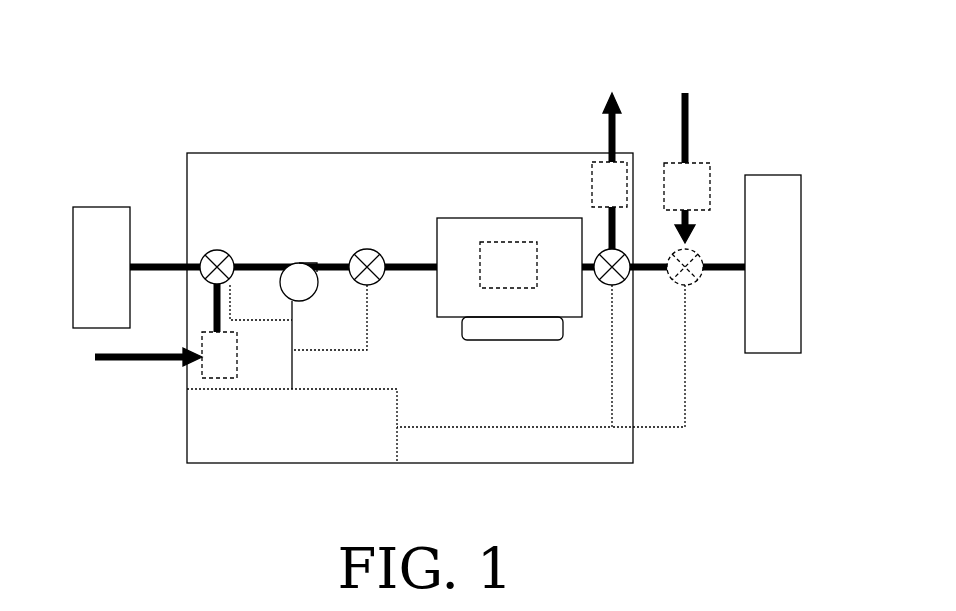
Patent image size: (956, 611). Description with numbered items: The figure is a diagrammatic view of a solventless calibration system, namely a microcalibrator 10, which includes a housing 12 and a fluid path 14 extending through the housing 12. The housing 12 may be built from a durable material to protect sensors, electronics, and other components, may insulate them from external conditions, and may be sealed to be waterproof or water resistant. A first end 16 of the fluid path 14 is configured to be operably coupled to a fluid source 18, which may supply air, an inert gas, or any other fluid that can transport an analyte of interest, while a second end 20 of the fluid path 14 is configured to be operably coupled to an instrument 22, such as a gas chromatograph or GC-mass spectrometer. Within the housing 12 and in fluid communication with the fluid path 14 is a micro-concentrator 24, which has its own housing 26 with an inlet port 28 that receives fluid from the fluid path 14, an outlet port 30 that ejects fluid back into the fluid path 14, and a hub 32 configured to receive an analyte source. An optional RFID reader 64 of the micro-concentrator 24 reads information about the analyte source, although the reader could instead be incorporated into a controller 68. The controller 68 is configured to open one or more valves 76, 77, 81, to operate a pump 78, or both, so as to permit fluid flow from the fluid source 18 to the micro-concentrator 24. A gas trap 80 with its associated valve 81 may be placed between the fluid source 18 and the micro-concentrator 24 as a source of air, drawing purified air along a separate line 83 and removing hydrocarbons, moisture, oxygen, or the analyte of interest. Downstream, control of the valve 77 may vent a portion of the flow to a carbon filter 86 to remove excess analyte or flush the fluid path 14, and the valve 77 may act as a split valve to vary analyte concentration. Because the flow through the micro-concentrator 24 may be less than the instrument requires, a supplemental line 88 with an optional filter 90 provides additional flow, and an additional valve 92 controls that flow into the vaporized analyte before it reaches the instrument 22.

The microcalibrator 10 is at (196, 101).
The housing 12 is at (268, 153).
The fluid path 14 is at (262, 262).
The first end 16 is at (132, 272).
The fluid source 18 is at (107, 206).
The second end 20 is at (742, 272).
The instrument 22 is at (762, 175).
The micro-concentrator 24 is at (519, 211).
The housing 26 is at (437, 242).
The inlet port 28 is at (438, 270).
The outlet port 30 is at (580, 268).
The hub 32 is at (461, 330).
The RFID reader 64 is at (483, 242).
The controller 68 is at (398, 402).
The valve 76 is at (360, 250).
The valve 77 is at (598, 282).
The pump 78 is at (290, 262).
The gas trap 80 is at (238, 353).
The valve 81 is at (226, 250).
The line 83 is at (157, 360).
The carbon filter 86 is at (592, 177).
The supplemental line 88 is at (690, 150).
The filter 90 is at (663, 175).
The valve 92 is at (672, 279).